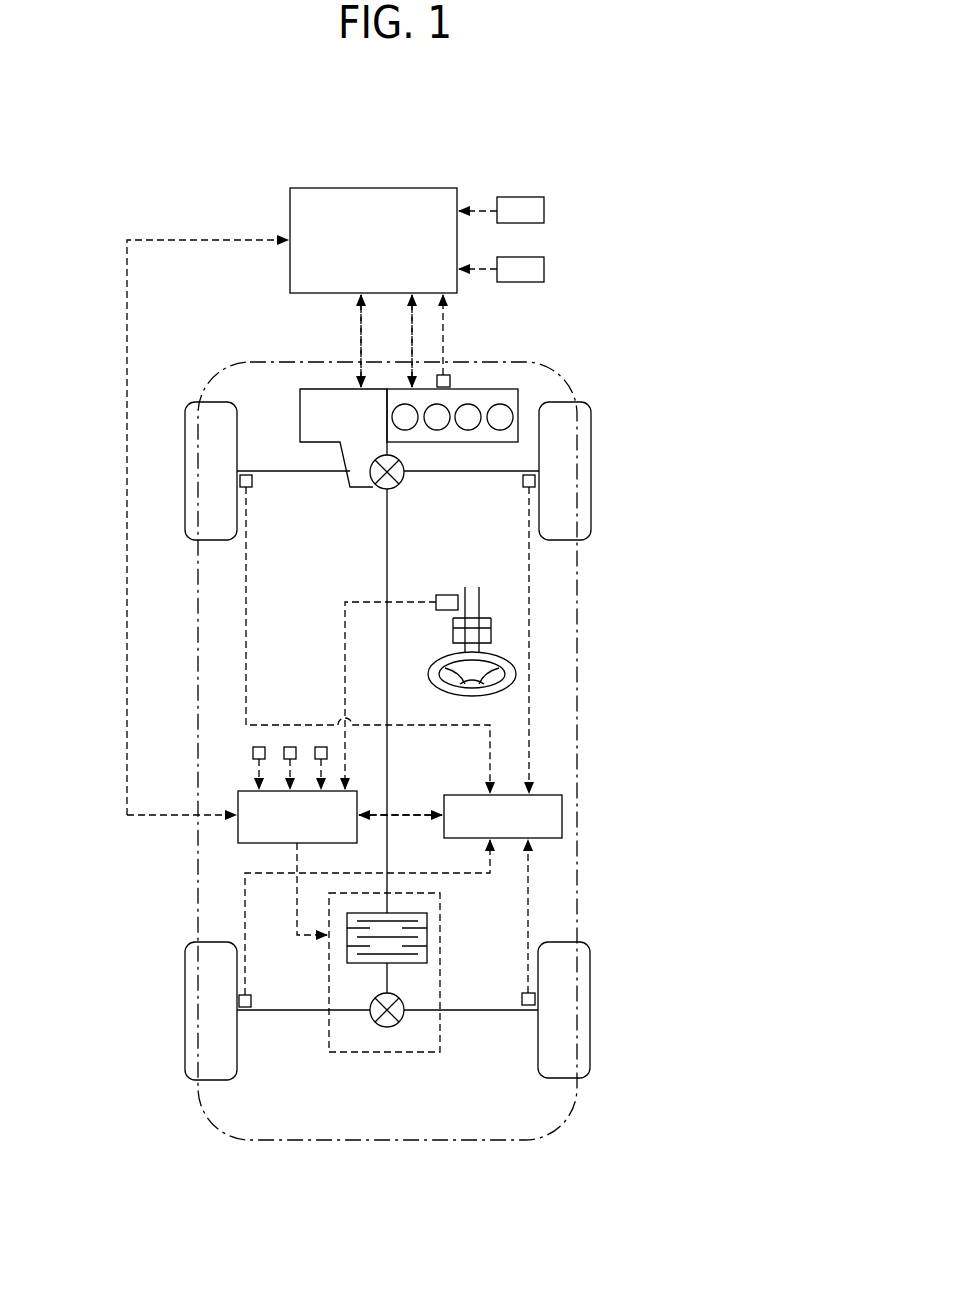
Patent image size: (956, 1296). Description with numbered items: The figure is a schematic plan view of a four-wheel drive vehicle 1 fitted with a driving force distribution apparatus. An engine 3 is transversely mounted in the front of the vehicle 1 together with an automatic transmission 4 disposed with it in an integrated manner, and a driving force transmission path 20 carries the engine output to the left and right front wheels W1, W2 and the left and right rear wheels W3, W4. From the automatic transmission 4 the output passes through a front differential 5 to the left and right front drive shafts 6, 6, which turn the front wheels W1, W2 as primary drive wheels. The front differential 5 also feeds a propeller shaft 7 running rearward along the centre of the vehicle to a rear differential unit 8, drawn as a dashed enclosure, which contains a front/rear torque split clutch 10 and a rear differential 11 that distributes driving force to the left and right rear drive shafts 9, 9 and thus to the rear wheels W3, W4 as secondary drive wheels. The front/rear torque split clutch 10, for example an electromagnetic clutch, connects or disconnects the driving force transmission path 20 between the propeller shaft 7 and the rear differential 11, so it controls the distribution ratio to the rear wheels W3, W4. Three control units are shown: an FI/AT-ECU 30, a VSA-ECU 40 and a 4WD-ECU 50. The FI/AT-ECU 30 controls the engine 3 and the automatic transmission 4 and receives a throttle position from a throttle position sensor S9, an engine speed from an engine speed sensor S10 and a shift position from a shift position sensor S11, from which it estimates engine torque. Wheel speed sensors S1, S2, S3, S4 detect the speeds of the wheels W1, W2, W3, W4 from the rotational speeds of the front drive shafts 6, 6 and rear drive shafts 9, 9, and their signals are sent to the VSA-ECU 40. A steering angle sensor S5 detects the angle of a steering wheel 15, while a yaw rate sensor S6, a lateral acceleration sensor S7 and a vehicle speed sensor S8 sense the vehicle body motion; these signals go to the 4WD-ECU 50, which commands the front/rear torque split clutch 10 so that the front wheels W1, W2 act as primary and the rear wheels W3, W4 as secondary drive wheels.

The four-wheel drive vehicle 1 is at (590, 362).
The engine 3 is at (507, 389).
The automatic transmission 4 is at (315, 389).
The front differential 5 is at (396, 487).
The front drive shaft 6 is at (323, 471).
The propeller shaft 7 is at (388, 712).
The rear differential unit 8 is at (329, 975).
The rear drive shaft 9 is at (292, 1012).
The front/rear torque split clutch 10 is at (415, 913).
The rear differential 11 is at (393, 1026).
The steering wheel 15 is at (504, 660).
The driving force transmission path 20 is at (303, 605).
The FI/AT-ECU 30 is at (403, 188).
The VSA-ECU 40 is at (545, 795).
The 4WD-ECU 50 is at (238, 796).
The left front wheel speed sensor S1 is at (247, 487).
The right front wheel speed sensor S2 is at (528, 487).
The left rear wheel speed sensor S3 is at (247, 1007).
The right rear wheel speed sensor S4 is at (527, 1005).
The steering angle sensor S5 is at (448, 595).
The yaw rate sensor S6 is at (321, 747).
The lateral acceleration sensor S7 is at (290, 747).
The vehicle speed sensor S8 is at (253, 752).
The throttle position sensor S9 is at (545, 209).
The engine speed sensor S10 is at (443, 375).
The shift position sensor S11 is at (545, 269).
The left front wheel W1 is at (195, 402).
The right front wheel W2 is at (580, 402).
The left rear wheel W3 is at (198, 942).
The right rear wheel W4 is at (585, 942).